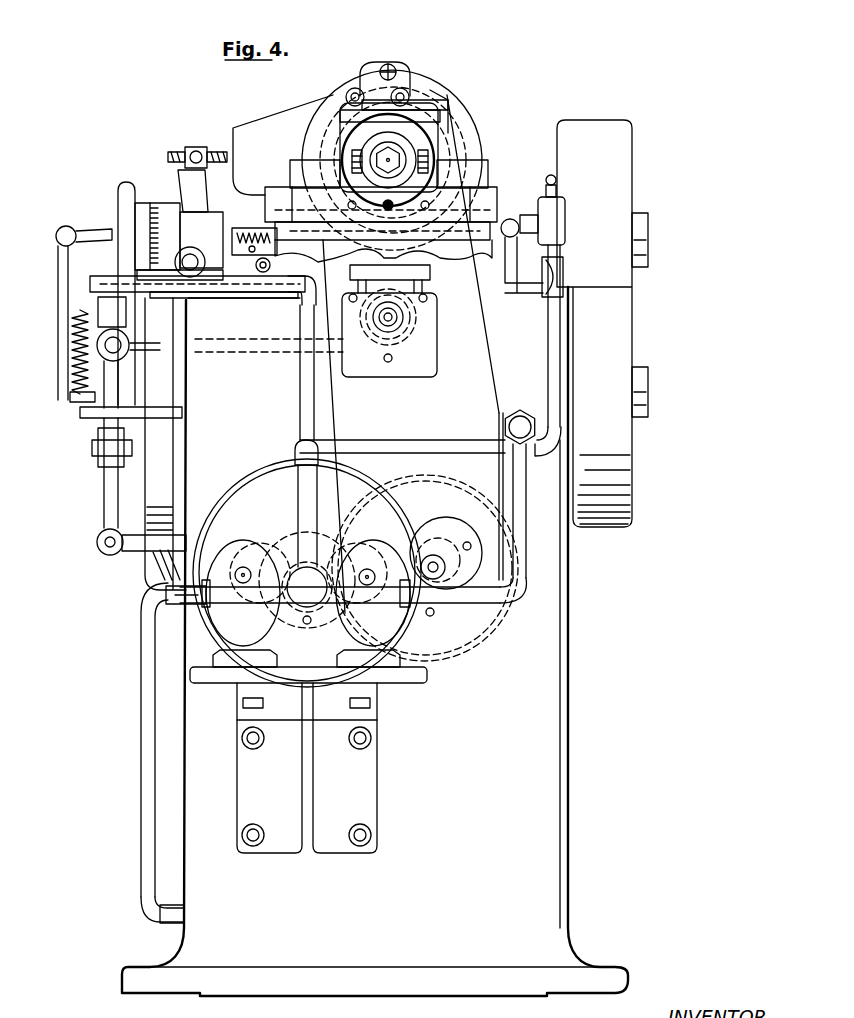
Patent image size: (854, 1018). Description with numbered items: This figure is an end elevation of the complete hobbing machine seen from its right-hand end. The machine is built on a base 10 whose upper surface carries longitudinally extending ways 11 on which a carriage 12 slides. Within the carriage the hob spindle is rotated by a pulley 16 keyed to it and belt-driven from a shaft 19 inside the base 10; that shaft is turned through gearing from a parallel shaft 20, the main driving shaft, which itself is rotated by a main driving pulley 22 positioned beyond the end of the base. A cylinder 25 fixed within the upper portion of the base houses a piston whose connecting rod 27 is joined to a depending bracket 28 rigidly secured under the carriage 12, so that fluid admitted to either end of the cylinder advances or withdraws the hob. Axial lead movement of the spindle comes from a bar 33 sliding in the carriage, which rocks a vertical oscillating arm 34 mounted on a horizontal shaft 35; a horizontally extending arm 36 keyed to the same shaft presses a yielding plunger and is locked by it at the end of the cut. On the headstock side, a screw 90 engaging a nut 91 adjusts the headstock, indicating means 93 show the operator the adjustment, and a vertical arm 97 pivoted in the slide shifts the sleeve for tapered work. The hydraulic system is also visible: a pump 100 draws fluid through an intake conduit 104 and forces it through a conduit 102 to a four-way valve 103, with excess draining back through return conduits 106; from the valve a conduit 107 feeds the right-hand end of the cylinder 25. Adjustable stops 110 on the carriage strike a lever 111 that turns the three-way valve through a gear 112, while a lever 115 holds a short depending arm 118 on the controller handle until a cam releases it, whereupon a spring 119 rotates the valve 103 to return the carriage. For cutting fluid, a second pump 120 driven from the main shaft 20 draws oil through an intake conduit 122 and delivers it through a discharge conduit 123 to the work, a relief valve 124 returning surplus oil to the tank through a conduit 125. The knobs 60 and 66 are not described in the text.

The base 10 is at (545, 698).
The ways 11 is at (345, 260).
The carriage 12 is at (482, 242).
The pulley 16 is at (462, 150).
The shaft 19 is at (434, 560).
The parallel shaft 20 is at (298, 566).
The main driving pulley 22 is at (232, 472).
The cylinder 25 is at (398, 328).
The connecting rod 27 is at (394, 318).
The depending bracket 28 is at (395, 332).
The bar 33 is at (396, 68).
The oscillating arm 34 is at (383, 75).
The shaft 35 is at (497, 205).
The horizontally extending arm 36 is at (278, 192).
The switch knob 60 is at (648, 392).
The switch knob 66 is at (648, 242).
The screw 90 is at (250, 232).
The nut 91 is at (255, 220).
The indicating means 93 is at (126, 183).
The vertical arm 97 is at (185, 180).
The pump 100 is at (243, 560).
The conduit 102 is at (312, 385).
The four-way valve 103 is at (68, 320).
The intake conduit 104 is at (148, 667).
The return conduits 106 is at (108, 510).
The conduit 107 is at (188, 357).
The adjustable stops 110 is at (266, 275).
The lever 111 is at (258, 295).
The gear 112 is at (108, 285).
The lever 115 is at (80, 394).
The short depending arm 118 is at (75, 370).
The spring 119 is at (80, 409).
The second pump 120 is at (370, 560).
The intake conduit 122 is at (522, 485).
The discharge conduit 123 is at (452, 442).
The relief valve 124 is at (548, 222).
The conduit 125 is at (520, 278).